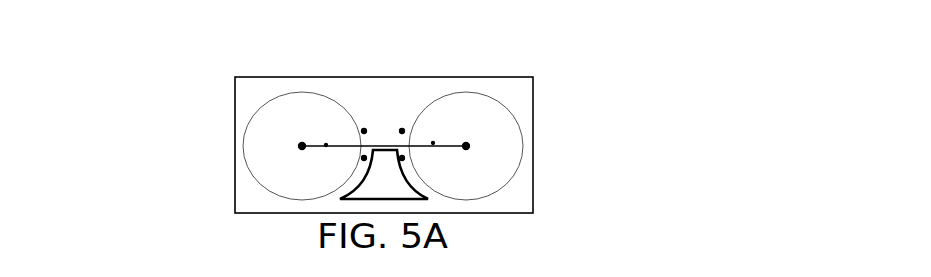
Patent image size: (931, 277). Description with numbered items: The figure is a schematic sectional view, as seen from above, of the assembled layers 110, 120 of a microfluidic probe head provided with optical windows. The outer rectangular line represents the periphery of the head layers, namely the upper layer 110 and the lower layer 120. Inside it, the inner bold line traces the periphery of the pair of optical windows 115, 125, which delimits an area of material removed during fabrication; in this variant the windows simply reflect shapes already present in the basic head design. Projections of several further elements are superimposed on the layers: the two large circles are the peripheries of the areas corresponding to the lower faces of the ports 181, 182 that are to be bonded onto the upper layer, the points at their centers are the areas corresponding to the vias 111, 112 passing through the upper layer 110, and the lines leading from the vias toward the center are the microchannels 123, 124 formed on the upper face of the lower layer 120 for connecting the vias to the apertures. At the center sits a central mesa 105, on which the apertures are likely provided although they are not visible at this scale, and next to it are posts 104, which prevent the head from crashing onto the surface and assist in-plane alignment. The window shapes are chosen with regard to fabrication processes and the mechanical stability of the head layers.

The upper layer 110 is at (290, 145).
The lower layer 120 is at (247, 188).
The port 181 is at (257, 105).
The port 182 is at (512, 110).
The via 111 is at (302, 146).
The via 112 is at (466, 146).
The microchannel 123 is at (326, 144).
The microchannel 124 is at (433, 142).
The post 104 is at (402, 130).
The central mesa 105 is at (383, 148).
The optical window 115 is at (502, 117).
The optical window 125 is at (360, 117).